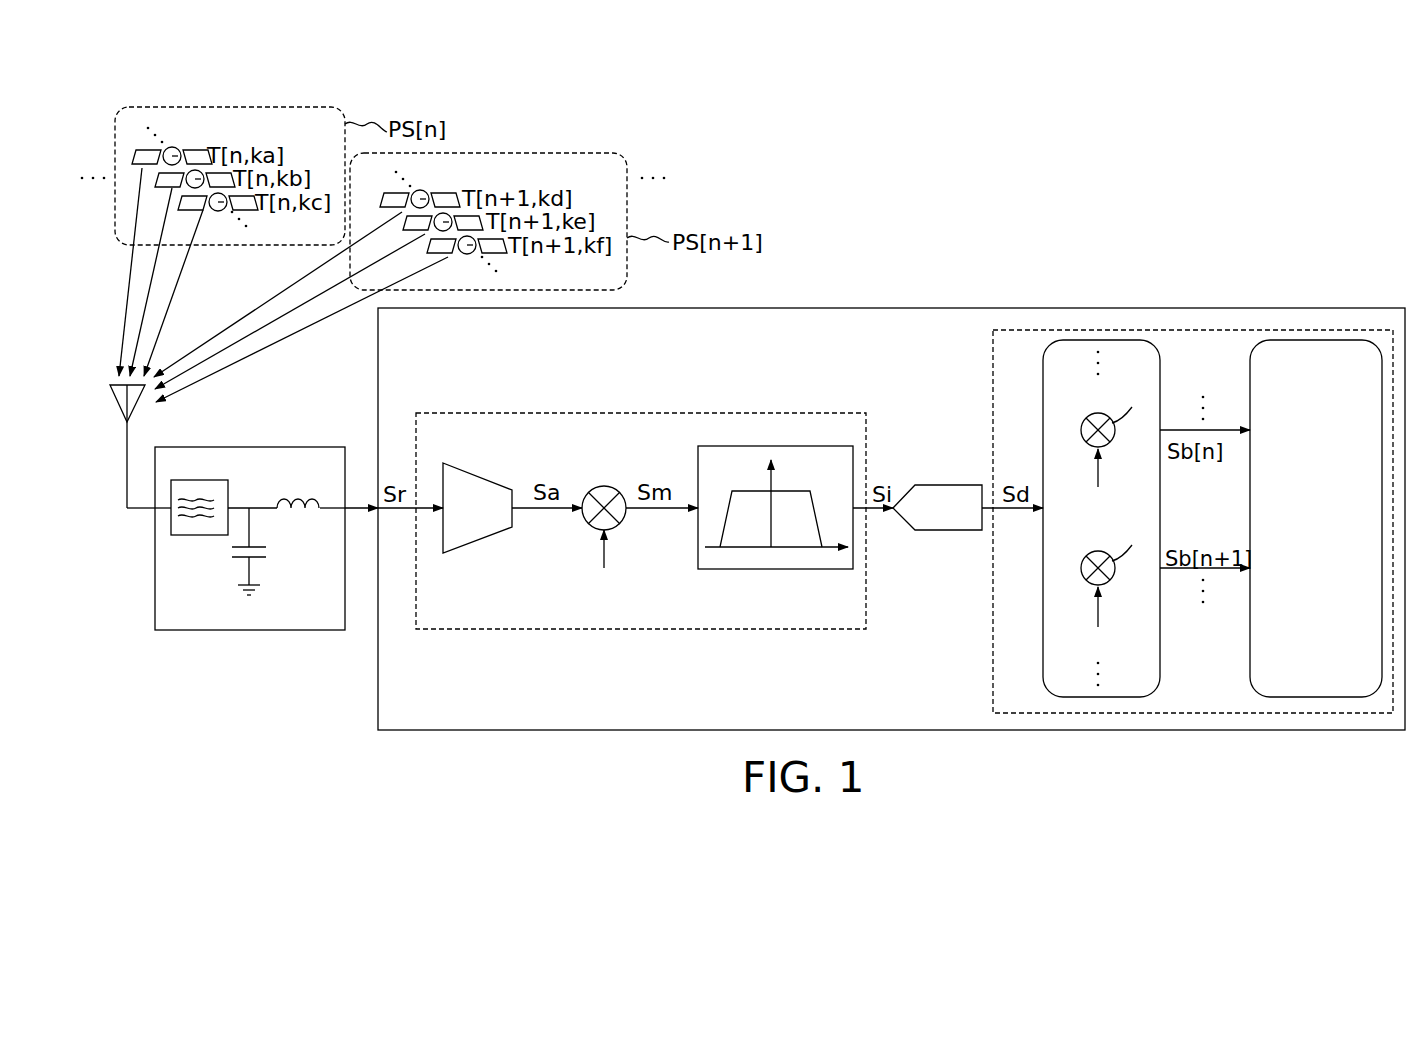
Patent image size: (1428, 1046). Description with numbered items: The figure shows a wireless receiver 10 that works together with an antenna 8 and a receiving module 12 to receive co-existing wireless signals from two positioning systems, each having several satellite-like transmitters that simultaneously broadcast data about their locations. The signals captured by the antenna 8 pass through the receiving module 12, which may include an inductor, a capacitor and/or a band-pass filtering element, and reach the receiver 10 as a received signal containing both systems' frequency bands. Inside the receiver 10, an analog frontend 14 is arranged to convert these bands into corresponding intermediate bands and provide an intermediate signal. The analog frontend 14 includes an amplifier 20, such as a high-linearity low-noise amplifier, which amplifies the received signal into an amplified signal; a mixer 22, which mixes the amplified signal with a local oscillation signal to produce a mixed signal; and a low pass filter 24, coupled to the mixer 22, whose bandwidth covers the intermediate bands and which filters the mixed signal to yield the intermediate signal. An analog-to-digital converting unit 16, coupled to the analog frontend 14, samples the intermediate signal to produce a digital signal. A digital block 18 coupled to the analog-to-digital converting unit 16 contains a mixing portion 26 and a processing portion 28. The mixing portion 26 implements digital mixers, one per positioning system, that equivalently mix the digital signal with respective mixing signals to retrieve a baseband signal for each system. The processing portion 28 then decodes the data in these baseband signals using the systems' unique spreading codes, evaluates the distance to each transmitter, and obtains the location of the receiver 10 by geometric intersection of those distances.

The antenna 8 is at (138, 408).
The receiver 10 is at (750, 308).
The receiving module 12 is at (265, 447).
The analog frontend 14 is at (617, 413).
The analog-to-digital converting unit 16 is at (933, 484).
The digital block 18 is at (993, 352).
The amplifier 20 is at (468, 542).
The mixer 22 is at (607, 486).
The low pass filter 24 is at (752, 570).
The mixing portion 26 is at (1160, 633).
The processing portion 28 is at (1250, 688).